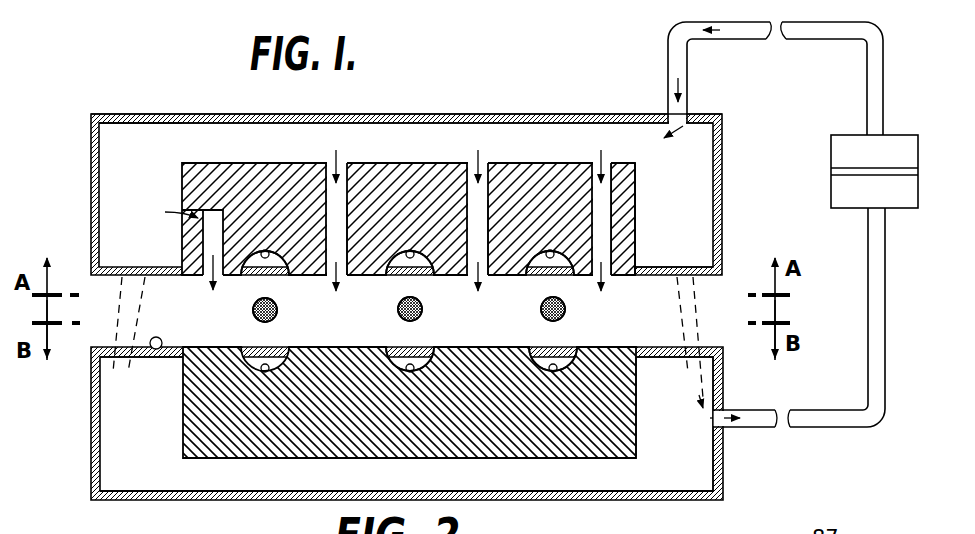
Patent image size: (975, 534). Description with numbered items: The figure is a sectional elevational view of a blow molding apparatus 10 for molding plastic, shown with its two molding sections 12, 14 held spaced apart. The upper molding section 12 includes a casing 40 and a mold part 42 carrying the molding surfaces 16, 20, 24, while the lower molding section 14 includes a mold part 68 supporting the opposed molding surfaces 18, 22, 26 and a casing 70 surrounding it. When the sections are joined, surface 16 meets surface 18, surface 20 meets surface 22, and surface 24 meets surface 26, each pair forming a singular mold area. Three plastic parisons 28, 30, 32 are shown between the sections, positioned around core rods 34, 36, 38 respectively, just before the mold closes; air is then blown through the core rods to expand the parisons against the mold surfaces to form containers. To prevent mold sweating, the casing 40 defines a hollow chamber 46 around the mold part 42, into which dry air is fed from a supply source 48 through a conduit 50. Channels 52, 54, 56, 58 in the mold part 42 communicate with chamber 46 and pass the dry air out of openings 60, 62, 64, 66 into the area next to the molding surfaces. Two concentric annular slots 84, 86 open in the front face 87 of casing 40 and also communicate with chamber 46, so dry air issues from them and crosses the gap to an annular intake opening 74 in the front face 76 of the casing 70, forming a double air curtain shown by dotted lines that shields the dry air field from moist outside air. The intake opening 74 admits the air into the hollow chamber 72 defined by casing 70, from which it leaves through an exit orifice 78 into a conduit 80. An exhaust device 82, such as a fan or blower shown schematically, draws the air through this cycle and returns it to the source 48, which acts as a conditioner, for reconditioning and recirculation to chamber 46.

The molding apparatus 10 is at (140, 93).
The molding section 12 is at (88, 191).
The molding section 14 is at (88, 427).
The molding surface 16 is at (268, 249).
The molding surface 18 is at (267, 366).
The mold surface 20 is at (410, 249).
The mold surface 22 is at (420, 366).
The mold surface 24 is at (552, 249).
The mold surface 26 is at (563, 366).
The plastic parison 28 is at (252, 312).
The plastic parison 30 is at (397, 311).
The plastic parison 32 is at (541, 311).
The core rod 34 is at (278, 308).
The core rod 36 is at (423, 307).
The core rod 38 is at (566, 307).
The casing 40 is at (480, 113).
The mold part 42 is at (640, 192).
The hollow chamber 46 is at (150, 137).
The supply source 48 is at (830, 140).
The conduit 50 is at (790, 32).
The channel 52 is at (212, 192).
The channel 54 is at (340, 165).
The channel 56 is at (480, 165).
The channel 58 is at (604, 165).
The opening 60 is at (228, 246).
The opening 62 is at (352, 250).
The opening 64 is at (492, 251).
The opening 66 is at (632, 222).
The mold part 68 is at (640, 388).
The casing 70 is at (700, 502).
The hollow chamber 72 is at (545, 478).
The annular opening 74 is at (136, 358).
The front face 76 is at (158, 350).
The exit orifice 78 is at (725, 410).
The conduit 80 is at (792, 430).
The exhaust device 82 is at (832, 200).
The annular slot 84 is at (150, 268).
The annular slot 86 is at (110, 268).
The front face 87 is at (640, 280).